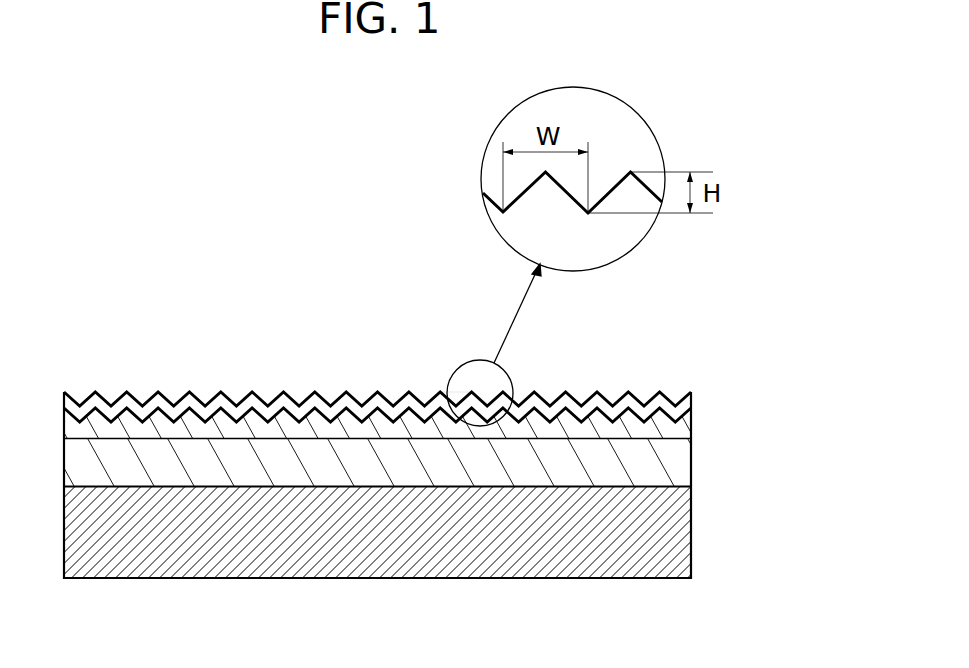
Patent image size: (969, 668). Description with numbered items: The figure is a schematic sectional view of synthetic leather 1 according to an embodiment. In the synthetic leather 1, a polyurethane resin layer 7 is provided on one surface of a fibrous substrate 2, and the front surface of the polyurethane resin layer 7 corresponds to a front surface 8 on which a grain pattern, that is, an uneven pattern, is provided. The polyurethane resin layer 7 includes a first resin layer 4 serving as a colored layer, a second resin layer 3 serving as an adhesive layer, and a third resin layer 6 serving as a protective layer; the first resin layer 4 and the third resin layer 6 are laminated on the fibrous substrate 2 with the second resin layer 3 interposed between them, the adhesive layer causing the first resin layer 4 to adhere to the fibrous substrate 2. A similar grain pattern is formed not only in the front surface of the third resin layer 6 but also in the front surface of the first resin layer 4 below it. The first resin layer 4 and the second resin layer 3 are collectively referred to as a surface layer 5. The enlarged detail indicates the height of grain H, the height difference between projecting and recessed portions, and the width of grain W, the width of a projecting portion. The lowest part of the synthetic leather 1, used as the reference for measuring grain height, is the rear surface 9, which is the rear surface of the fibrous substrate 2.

The synthetic leather 1 is at (337, 326).
The fibrous substrate 2 is at (692, 537).
The second resin layer (adhesive layer) 3 is at (692, 467).
The first resin layer (colored layer) 4 is at (691, 425).
The surface layer 5 is at (768, 378).
The third resin layer (protective layer) 6 is at (691, 395).
The polyurethane resin layer 7 is at (832, 317).
The front surface 8 is at (622, 381).
The rear surface 9 is at (646, 579).